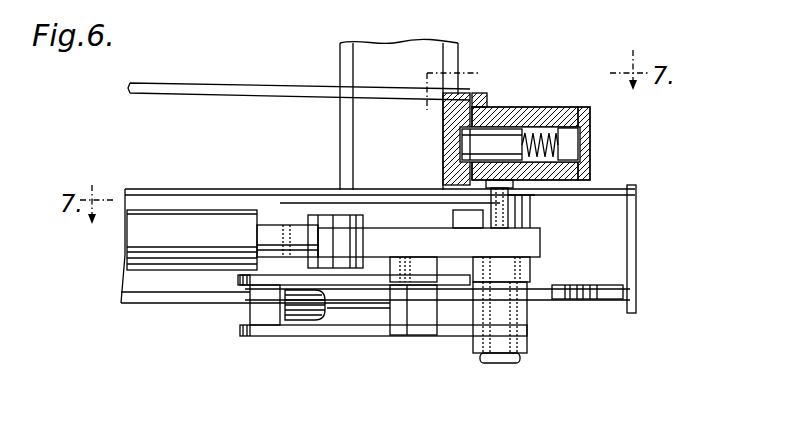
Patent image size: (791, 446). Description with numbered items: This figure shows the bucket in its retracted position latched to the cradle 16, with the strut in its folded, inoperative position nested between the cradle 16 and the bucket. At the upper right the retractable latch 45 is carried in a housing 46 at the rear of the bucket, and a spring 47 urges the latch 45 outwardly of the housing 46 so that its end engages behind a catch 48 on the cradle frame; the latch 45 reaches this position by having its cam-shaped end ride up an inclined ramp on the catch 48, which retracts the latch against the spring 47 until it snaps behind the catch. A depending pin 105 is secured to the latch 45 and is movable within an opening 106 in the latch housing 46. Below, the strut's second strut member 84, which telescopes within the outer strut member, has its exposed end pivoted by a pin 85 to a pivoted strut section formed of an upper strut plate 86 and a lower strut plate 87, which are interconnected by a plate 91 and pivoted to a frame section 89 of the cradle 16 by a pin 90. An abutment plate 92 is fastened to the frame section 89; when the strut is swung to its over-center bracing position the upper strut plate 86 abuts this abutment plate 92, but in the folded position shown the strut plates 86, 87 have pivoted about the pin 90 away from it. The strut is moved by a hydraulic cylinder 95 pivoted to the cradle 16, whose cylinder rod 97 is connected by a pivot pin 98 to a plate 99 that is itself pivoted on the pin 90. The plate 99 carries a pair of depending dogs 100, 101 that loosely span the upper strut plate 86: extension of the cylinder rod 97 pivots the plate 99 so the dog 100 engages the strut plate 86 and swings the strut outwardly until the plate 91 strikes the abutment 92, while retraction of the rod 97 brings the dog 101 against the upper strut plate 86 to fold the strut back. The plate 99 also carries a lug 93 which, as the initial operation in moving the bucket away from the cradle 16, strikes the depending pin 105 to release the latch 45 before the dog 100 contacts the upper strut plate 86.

The cradle 16 is at (227, 82).
The retractable latch 45 is at (495, 128).
The latch housing 46 is at (540, 107).
The spring 47 is at (573, 140).
The catch 48 is at (460, 118).
The second strut member 84 is at (305, 312).
The pin 85 is at (257, 303).
The upper strut plate 86 is at (243, 281).
The lower strut plate 87 is at (338, 333).
The frame section 89 is at (630, 222).
The pin 90 is at (496, 358).
The plate 91 is at (405, 312).
The abutment plate 92 is at (590, 287).
The lug 93 is at (455, 218).
The hydraulic cylinder 95 is at (175, 226).
The cylinder rod 97 is at (272, 234).
The pivot pin 98 is at (333, 218).
The plate 99 is at (372, 235).
The dog 100 is at (455, 268).
The dog 101 is at (425, 268).
The depending pin 105 is at (500, 220).
The opening 106 is at (525, 178).